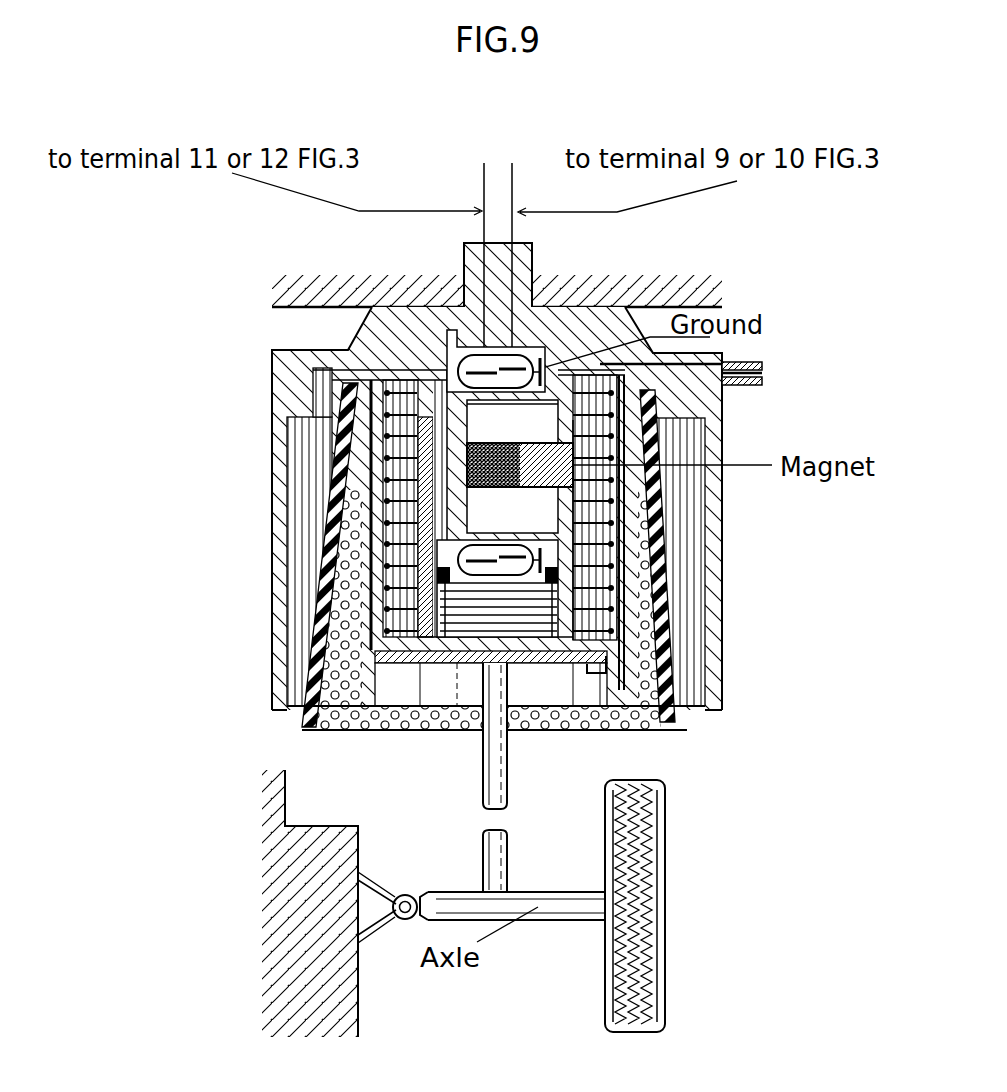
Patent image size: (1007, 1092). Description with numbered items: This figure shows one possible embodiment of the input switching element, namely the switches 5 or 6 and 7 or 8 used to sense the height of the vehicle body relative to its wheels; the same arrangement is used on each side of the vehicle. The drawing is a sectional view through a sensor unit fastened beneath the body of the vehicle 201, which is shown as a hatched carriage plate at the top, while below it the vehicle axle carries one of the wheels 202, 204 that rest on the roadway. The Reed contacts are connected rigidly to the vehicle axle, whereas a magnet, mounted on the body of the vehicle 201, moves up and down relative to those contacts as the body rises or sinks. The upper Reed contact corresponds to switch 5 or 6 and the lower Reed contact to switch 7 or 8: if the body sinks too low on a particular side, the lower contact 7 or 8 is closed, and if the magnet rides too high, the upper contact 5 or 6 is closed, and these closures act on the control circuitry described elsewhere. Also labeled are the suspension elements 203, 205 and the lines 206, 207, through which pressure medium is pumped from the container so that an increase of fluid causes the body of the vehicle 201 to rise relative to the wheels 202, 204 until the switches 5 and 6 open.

The body of the vehicle 201 is at (747, 260).
The wheel 202 is at (736, 906).
The wheel 204 is at (780, 846).
The suspension element 203 is at (538, 477).
The suspension element 205 is at (538, 477).
The line 206 is at (831, 388).
The line 207 is at (745, 380).
The switch 5 is at (340, 306).
The switch 6 is at (462, 345).
The switch 7 is at (689, 626).
The switch 8 is at (515, 563).